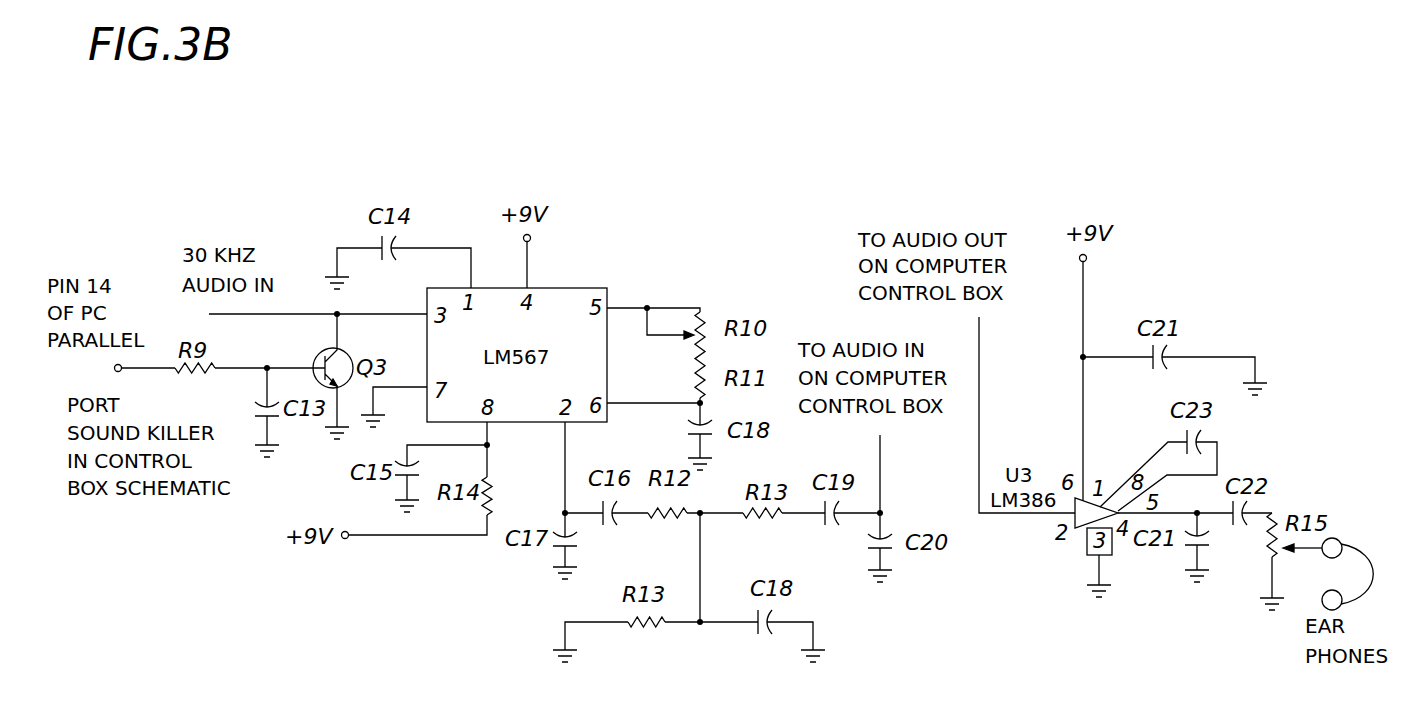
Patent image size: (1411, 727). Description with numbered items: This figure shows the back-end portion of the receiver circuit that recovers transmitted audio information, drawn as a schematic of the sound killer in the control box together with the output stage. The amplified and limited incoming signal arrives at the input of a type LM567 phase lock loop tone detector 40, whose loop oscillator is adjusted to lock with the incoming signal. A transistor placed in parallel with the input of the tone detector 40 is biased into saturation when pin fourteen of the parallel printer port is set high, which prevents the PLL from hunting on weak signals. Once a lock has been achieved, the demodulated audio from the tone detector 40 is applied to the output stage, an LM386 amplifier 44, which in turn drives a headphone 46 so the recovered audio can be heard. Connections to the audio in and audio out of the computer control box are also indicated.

The phase lock loop tone detector 40 is at (568, 288).
The amplifier 44 is at (1080, 532).
The headphone 46 is at (1323, 607).